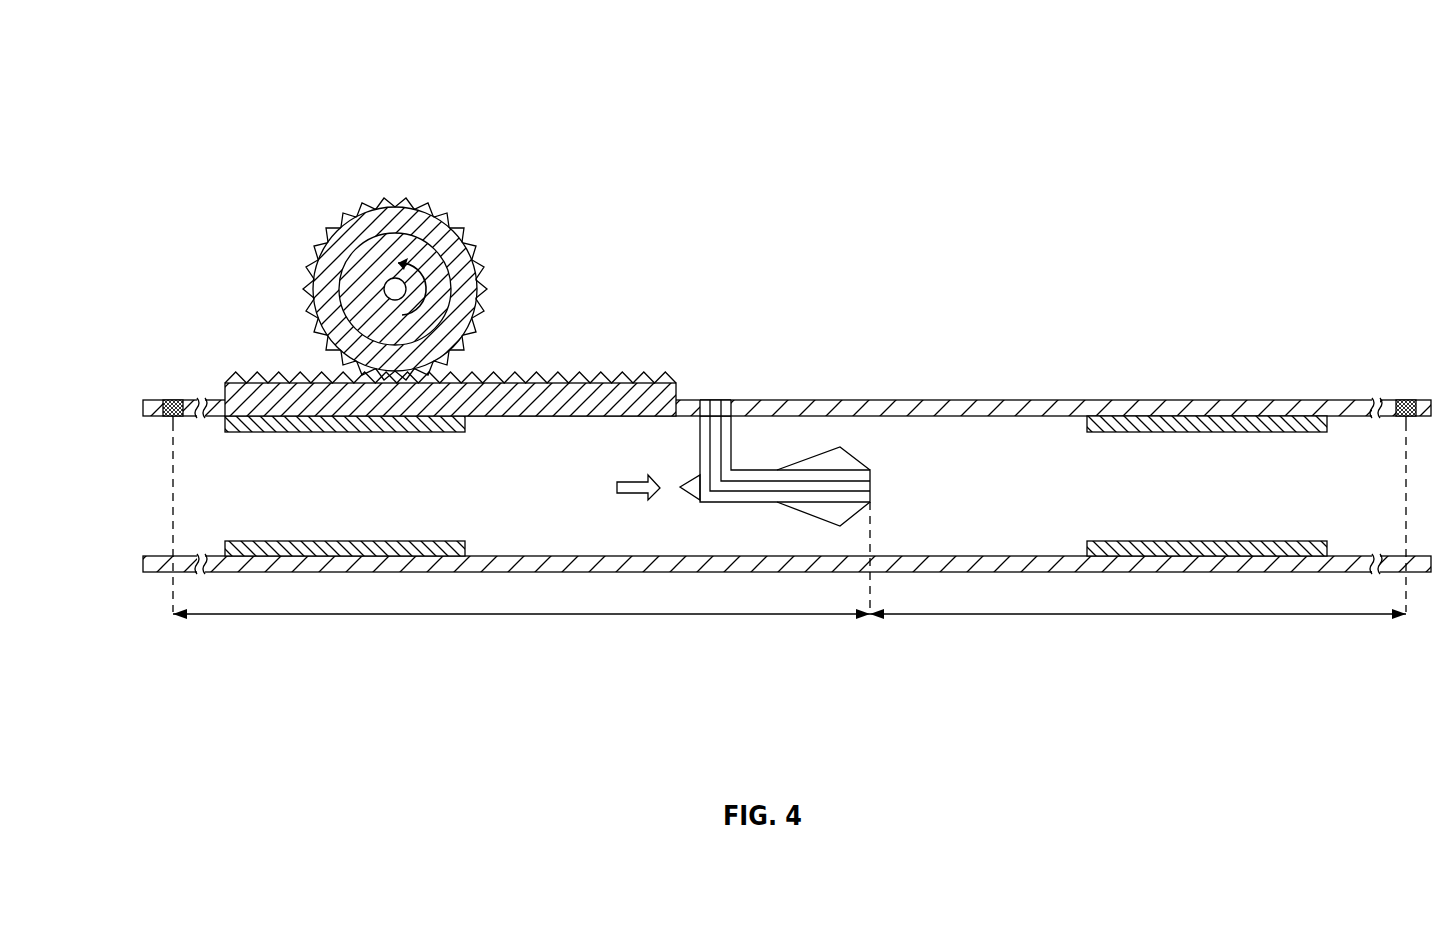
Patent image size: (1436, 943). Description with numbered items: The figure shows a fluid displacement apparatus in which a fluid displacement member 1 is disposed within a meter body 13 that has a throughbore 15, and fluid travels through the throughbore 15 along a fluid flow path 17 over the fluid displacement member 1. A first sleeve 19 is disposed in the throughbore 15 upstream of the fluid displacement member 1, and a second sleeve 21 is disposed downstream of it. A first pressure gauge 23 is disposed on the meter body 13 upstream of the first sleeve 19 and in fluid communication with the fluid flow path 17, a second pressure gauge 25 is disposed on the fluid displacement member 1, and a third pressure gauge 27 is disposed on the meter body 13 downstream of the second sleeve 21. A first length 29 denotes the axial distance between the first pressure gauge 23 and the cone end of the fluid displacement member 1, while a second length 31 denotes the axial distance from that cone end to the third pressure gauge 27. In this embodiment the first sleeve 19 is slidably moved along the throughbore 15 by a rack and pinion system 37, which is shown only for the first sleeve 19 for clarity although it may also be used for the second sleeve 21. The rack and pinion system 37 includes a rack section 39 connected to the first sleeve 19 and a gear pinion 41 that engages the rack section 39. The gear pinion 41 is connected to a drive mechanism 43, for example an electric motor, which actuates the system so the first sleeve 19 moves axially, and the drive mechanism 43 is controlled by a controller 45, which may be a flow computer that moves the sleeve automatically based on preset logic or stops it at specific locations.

The fluid displacement member 1 is at (807, 517).
The meter body 13 is at (1000, 560).
The throughbore 15 is at (633, 530).
The fluid flow path 17 is at (627, 482).
The first sleeve 19 is at (368, 422).
The second sleeve 21 is at (1187, 423).
The first pressure gauge 23 is at (178, 398).
The second pressure gauge 25 is at (716, 400).
The third pressure gauge 27 is at (1400, 400).
The first length 29 is at (515, 616).
The second length 31 is at (1172, 616).
The rack and pinion system 37 is at (727, 140).
The rack section 39 is at (626, 375).
The gear pinion 41 is at (353, 212).
The drive mechanism 43 is at (452, 288).
The controller 45 is at (408, 260).